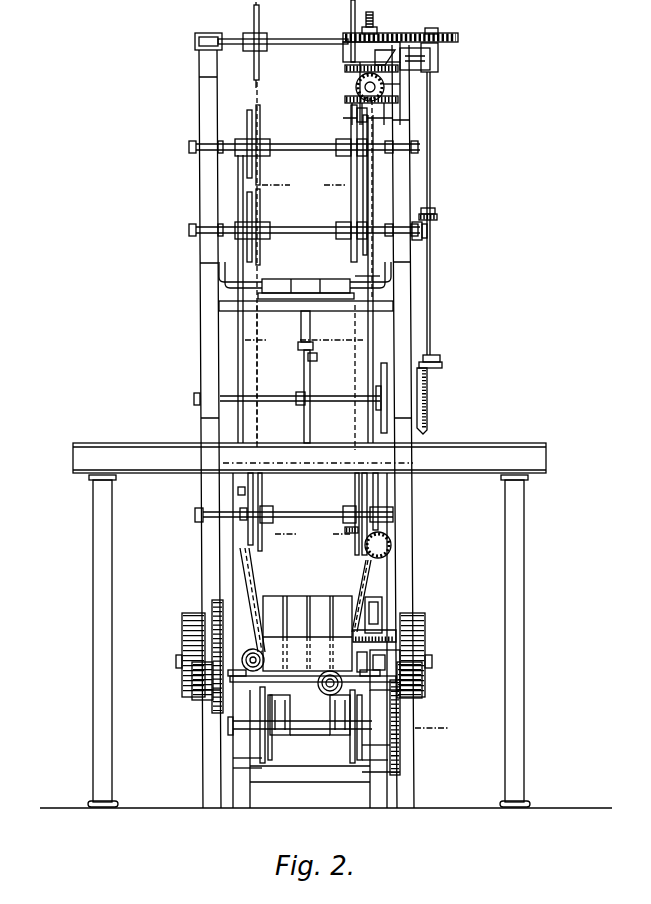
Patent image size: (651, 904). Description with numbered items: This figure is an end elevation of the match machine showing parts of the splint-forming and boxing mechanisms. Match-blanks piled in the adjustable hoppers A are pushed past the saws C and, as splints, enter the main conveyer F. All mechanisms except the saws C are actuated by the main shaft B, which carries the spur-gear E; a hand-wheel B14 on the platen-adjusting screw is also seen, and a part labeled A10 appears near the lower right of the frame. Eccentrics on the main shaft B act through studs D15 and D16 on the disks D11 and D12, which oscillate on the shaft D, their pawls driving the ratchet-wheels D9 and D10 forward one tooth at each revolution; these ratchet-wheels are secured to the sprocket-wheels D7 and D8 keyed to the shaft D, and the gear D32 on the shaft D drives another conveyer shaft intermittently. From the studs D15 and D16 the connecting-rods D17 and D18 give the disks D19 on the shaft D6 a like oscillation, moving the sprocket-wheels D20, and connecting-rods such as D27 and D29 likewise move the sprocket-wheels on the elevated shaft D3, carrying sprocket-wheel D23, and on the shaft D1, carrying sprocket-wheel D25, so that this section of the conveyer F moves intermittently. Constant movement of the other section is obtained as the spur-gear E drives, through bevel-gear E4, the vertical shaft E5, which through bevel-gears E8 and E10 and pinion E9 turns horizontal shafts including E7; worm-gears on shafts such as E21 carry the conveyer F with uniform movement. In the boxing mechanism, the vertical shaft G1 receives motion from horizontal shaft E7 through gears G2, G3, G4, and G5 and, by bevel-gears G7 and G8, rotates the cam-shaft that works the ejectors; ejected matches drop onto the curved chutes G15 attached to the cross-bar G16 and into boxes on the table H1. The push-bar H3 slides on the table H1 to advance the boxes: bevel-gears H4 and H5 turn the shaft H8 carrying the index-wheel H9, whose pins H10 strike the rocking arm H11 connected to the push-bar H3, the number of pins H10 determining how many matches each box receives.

The shaft E21 is at (305, 30).
The gear G3 is at (377, 33).
The gear G2 is at (442, 33).
The gear G4 is at (347, 68).
The gear G5 is at (356, 84).
The bevel-gear E10 is at (349, 100).
The horizontal shaft E7 is at (402, 88).
The vertical shaft G1 is at (431, 167).
The bevel-gear G7 is at (437, 214).
The bevel-gear G8 is at (425, 232).
The shaft D3 is at (188, 150).
The shaft D1 is at (188, 233).
The sprocket-wheel D23 is at (345, 127).
The connecting-rod D29 is at (303, 186).
The sprocket-wheel D25 is at (345, 246).
The curved chutes G15 is at (306, 277).
The cross-bar G16 is at (218, 284).
The push-bar H3 is at (370, 292).
The table H1 is at (395, 299).
The connecting-rod D27 is at (304, 341).
The rocking arm H11 is at (311, 335).
The pins H10 is at (317, 357).
The index-wheel H9 is at (310, 415).
The shaft H8 is at (281, 403).
The main conveyer F is at (356, 386).
The beveled gear H4 is at (440, 365).
The beveled gear H5 is at (428, 402).
The shaft D6 is at (188, 517).
The disks D19 is at (246, 536).
The sprocket-wheels D20 is at (312, 535).
The bevel-gear E8 is at (358, 534).
The pinion E9 is at (392, 550).
The connecting-rod D18 is at (246, 575).
The connecting-rod D17 is at (366, 566).
The vertical shaft E5 is at (378, 582).
The bevel-gear E4 is at (376, 634).
The adjustable hoppers A is at (343, 598).
The spur-gear E is at (221, 610).
The main shaft B is at (430, 662).
The hand-wheel B14 is at (251, 649).
The saws C is at (282, 688).
The column A10 is at (450, 721).
The gear D32 is at (442, 731).
The shaft D is at (218, 725).
The stud D16 is at (288, 732).
The stud D15 is at (333, 732).
The sprocket-wheel D7 is at (400, 745).
The sprocket-wheel D8 is at (258, 744).
The ratchet-wheel D9 is at (400, 760).
The ratchet-wheel D10 is at (258, 757).
The disk D11 is at (402, 773).
The disk D12 is at (262, 768).